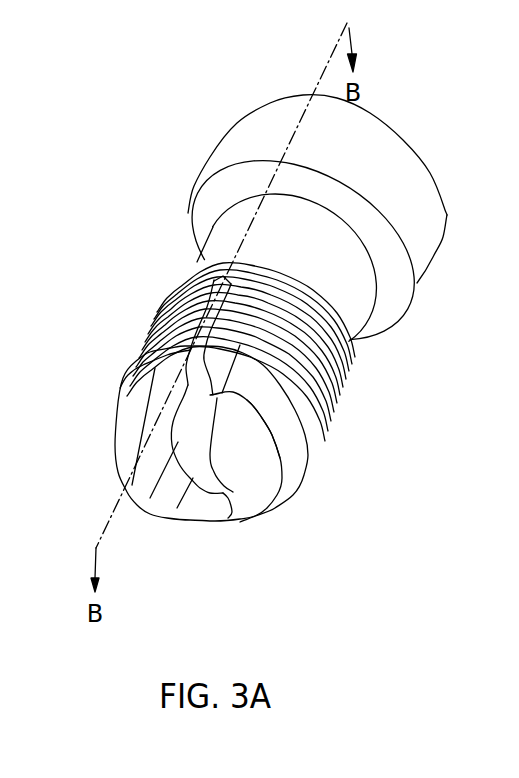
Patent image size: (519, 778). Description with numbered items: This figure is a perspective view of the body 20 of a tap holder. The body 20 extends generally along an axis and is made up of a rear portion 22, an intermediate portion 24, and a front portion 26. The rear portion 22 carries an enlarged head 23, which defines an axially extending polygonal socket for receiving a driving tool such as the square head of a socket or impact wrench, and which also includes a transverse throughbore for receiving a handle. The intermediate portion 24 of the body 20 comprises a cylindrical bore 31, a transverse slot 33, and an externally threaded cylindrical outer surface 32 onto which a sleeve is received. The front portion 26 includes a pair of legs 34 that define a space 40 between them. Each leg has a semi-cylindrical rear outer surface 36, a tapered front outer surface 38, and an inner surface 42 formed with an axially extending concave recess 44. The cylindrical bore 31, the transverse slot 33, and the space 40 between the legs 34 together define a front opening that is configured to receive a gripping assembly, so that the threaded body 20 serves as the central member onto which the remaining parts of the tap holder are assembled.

The body 20 is at (177, 115).
The rear portion 22 is at (370, 320).
The enlarged head 23 is at (420, 197).
The intermediate portion 24 is at (170, 328).
The front portion 26 is at (267, 487).
The cylindrical bore 31 is at (193, 408).
The externally threaded cylindrical outer surface 32 is at (163, 307).
The transverse slot 33 is at (183, 281).
The legs 34 is at (122, 438).
The semi-cylindrical rear outer surface 36 is at (285, 453).
The tapered front outer surface 38 is at (248, 508).
The space 40 is at (205, 500).
The inner surface 42 is at (165, 508).
The concave recess 44 is at (140, 490).